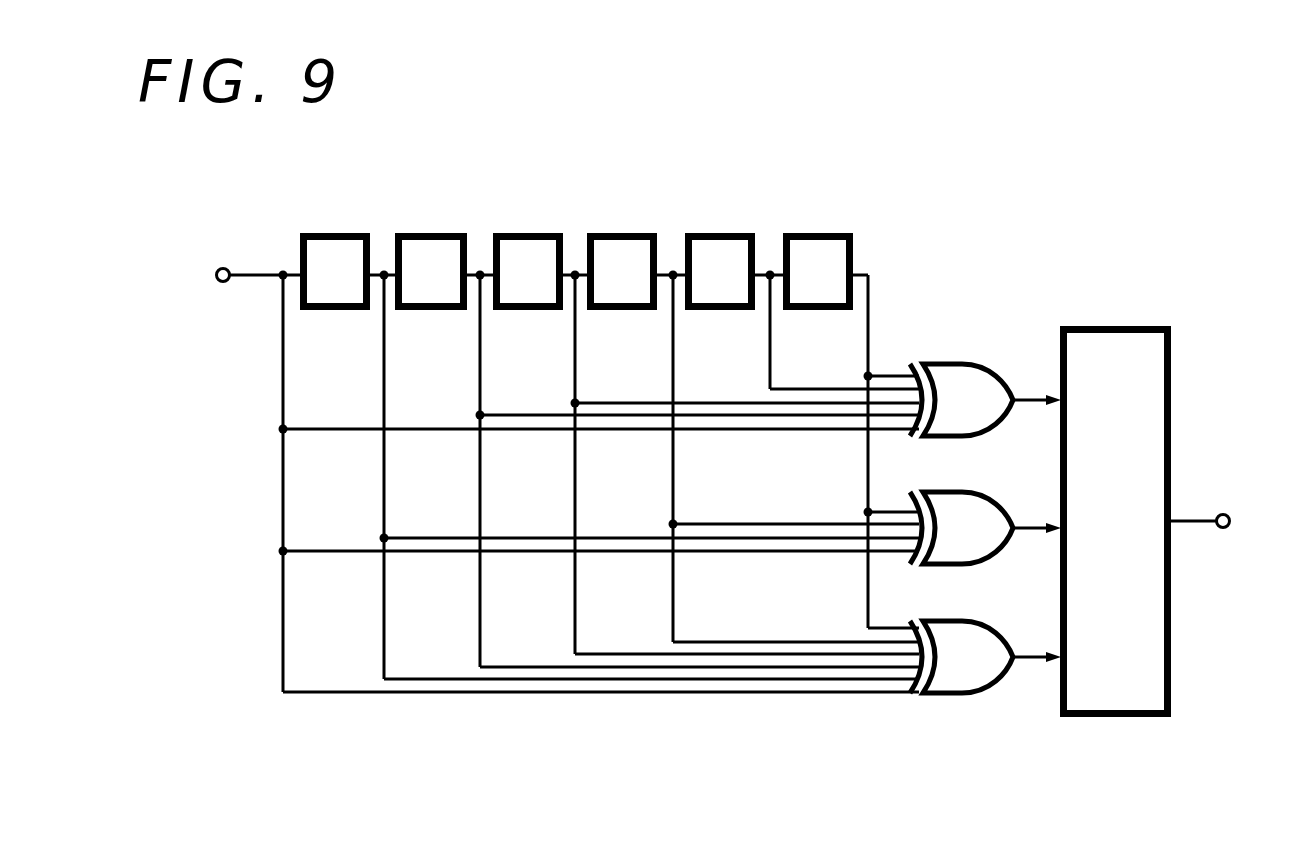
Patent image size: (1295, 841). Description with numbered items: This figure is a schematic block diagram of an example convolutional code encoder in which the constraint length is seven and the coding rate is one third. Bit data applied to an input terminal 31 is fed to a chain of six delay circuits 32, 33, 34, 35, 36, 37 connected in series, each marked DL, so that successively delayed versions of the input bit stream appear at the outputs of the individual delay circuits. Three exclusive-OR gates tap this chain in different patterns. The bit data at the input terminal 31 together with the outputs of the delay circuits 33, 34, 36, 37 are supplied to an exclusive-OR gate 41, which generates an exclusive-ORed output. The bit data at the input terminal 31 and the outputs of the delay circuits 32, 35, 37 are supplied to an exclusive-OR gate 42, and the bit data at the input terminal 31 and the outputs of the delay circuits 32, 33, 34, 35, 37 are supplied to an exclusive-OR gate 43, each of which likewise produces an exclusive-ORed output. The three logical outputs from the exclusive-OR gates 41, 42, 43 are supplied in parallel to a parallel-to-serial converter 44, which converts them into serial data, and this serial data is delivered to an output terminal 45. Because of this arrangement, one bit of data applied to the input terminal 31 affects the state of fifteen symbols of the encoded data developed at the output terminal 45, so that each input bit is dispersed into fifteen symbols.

The input terminal 31 is at (222, 283).
The delay circuit 32 is at (337, 232).
The delay circuit 33 is at (440, 232).
The delay circuit 34 is at (536, 232).
The delay circuit 35 is at (632, 232).
The delay circuit 36 is at (728, 232).
The delay circuit 37 is at (814, 232).
The exclusive-OR gate 41 is at (985, 364).
The exclusive-OR gate 42 is at (985, 492).
The exclusive-OR gate 43 is at (985, 621).
The parallel-to-serial converter 44 is at (1171, 362).
The output terminal 45 is at (1225, 514).